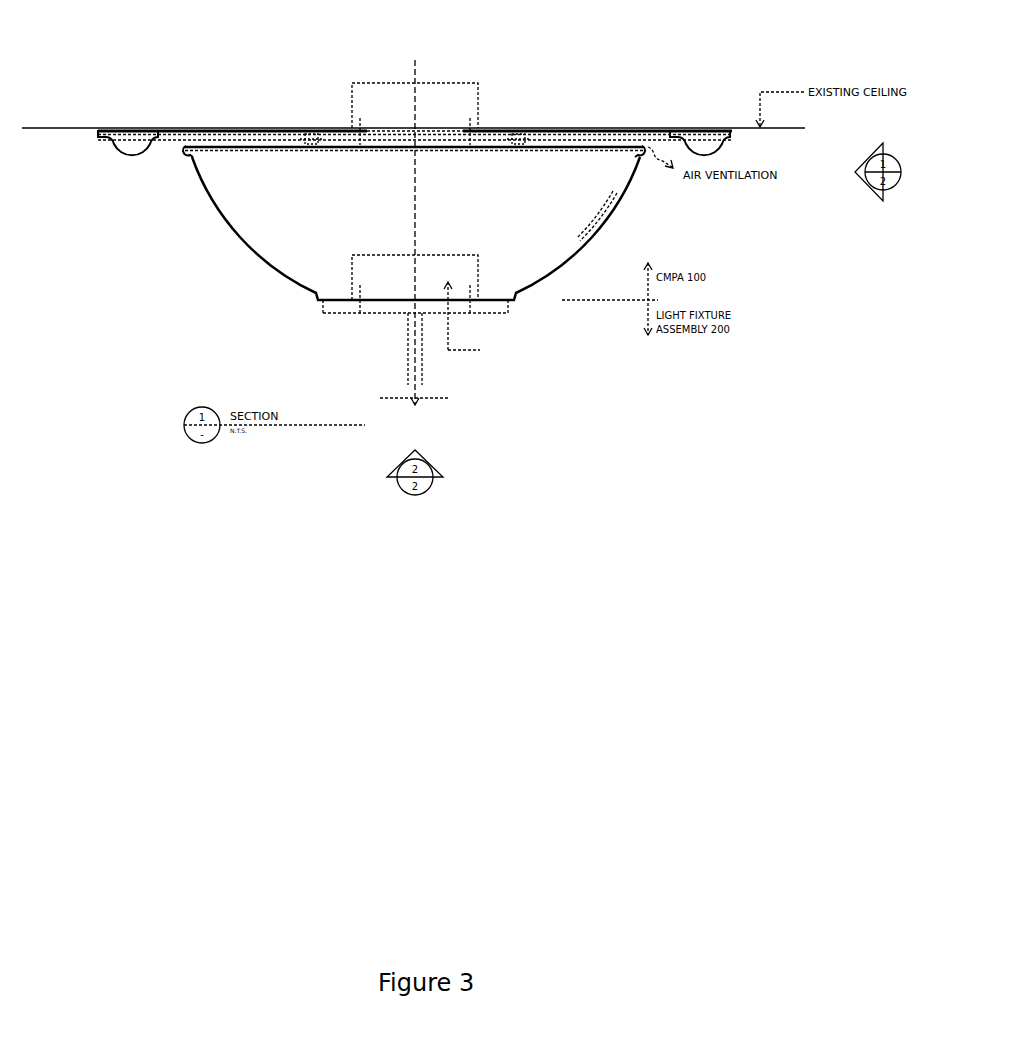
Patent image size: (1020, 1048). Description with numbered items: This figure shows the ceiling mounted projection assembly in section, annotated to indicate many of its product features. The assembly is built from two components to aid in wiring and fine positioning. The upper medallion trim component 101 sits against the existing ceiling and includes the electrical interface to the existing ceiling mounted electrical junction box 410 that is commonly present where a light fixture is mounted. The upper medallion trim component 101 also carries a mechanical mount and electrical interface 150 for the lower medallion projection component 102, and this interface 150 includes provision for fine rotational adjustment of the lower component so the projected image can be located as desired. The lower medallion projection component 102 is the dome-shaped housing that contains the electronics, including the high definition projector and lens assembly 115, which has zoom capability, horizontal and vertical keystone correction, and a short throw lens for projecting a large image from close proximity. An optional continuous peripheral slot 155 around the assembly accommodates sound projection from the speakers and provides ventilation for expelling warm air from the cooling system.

The upper medallion trim component 101 is at (393, 166).
The lower medallion projection component 102 is at (245, 243).
The projector and lens assembly 115 is at (612, 215).
The mechanical mount and electrical interface 150 is at (464, 102).
The continuous peripheral slot 155 is at (415, 87).
The existing ceiling mounted electrical junction box 410 is at (451, 76).